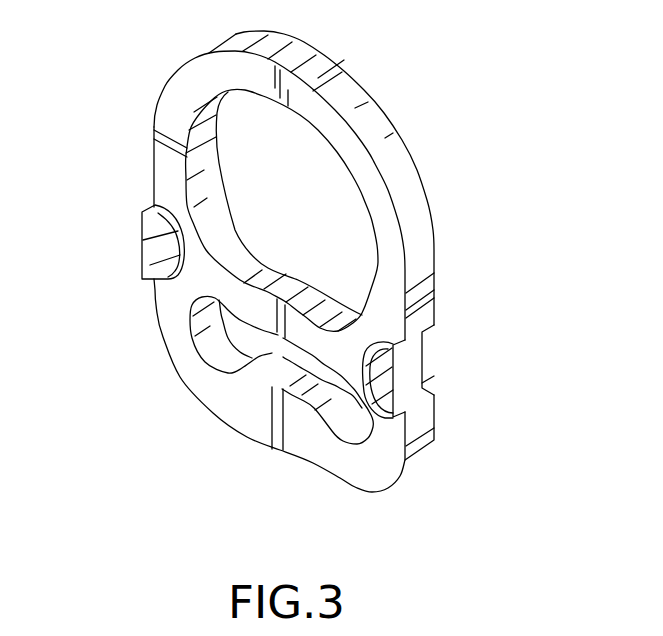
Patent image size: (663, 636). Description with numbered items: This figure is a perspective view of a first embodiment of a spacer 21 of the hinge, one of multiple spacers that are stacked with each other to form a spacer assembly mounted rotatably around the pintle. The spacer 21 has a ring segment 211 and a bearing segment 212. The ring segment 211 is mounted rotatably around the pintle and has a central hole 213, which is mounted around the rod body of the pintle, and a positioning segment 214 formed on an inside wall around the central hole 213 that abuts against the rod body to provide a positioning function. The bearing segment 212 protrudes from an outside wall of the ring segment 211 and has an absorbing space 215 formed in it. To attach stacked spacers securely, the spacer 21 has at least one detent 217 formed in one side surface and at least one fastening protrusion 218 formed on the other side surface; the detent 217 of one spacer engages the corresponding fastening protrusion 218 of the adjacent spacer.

The spacer 21 is at (81, 59).
The ring segment 211 is at (330, 64).
The bearing segment 212 is at (163, 337).
The central hole 213 is at (332, 165).
The positioning segment 214 is at (308, 294).
The absorbing space 215 is at (307, 360).
The detent 217 is at (423, 361).
The fastening protrusion 218 is at (393, 387).